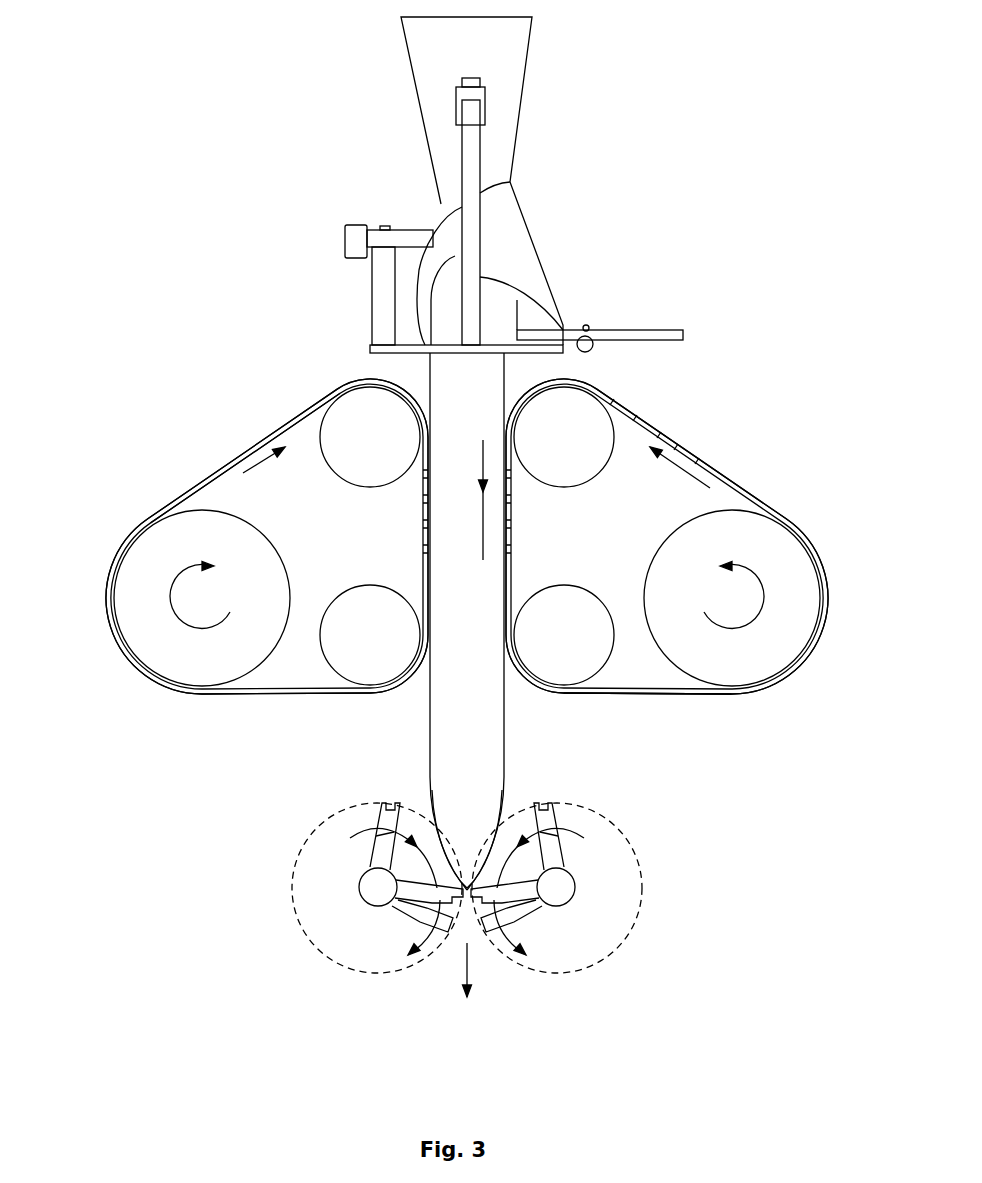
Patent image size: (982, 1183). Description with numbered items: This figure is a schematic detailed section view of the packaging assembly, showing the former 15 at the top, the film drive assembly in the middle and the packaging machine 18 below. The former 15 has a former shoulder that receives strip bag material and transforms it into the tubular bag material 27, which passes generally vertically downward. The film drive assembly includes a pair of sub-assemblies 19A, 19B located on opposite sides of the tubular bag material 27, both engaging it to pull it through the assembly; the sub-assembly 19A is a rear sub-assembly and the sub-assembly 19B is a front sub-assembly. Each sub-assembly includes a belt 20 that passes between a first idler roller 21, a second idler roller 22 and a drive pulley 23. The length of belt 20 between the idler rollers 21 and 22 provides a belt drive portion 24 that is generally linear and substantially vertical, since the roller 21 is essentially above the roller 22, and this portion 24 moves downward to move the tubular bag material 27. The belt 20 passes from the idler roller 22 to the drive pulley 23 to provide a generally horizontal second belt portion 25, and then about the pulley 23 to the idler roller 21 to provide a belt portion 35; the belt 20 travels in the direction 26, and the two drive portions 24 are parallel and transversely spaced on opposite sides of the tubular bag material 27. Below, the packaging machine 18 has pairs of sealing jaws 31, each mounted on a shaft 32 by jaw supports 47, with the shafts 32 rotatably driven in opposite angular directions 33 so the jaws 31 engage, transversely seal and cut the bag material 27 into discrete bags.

The former 15 is at (520, 238).
The packaging machine 18 is at (178, 845).
The sub-assembly 19A is at (188, 393).
The sub-assembly 19B is at (770, 443).
The belt 20 is at (213, 683).
The first idler roller 21 is at (358, 449).
The second idler roller 22 is at (358, 644).
The drive pulley 23 is at (184, 609).
The belt drive portion 24 is at (422, 590).
The second belt portion 25 is at (676, 698).
The direction 26 is at (243, 473).
The tubular bag material 27 is at (427, 735).
The sealing jaws 31 is at (382, 817).
The shaft 32 is at (358, 882).
The angular directions 33 is at (415, 950).
The belt portion 35 is at (212, 473).
The jaw supports 47 is at (382, 852).